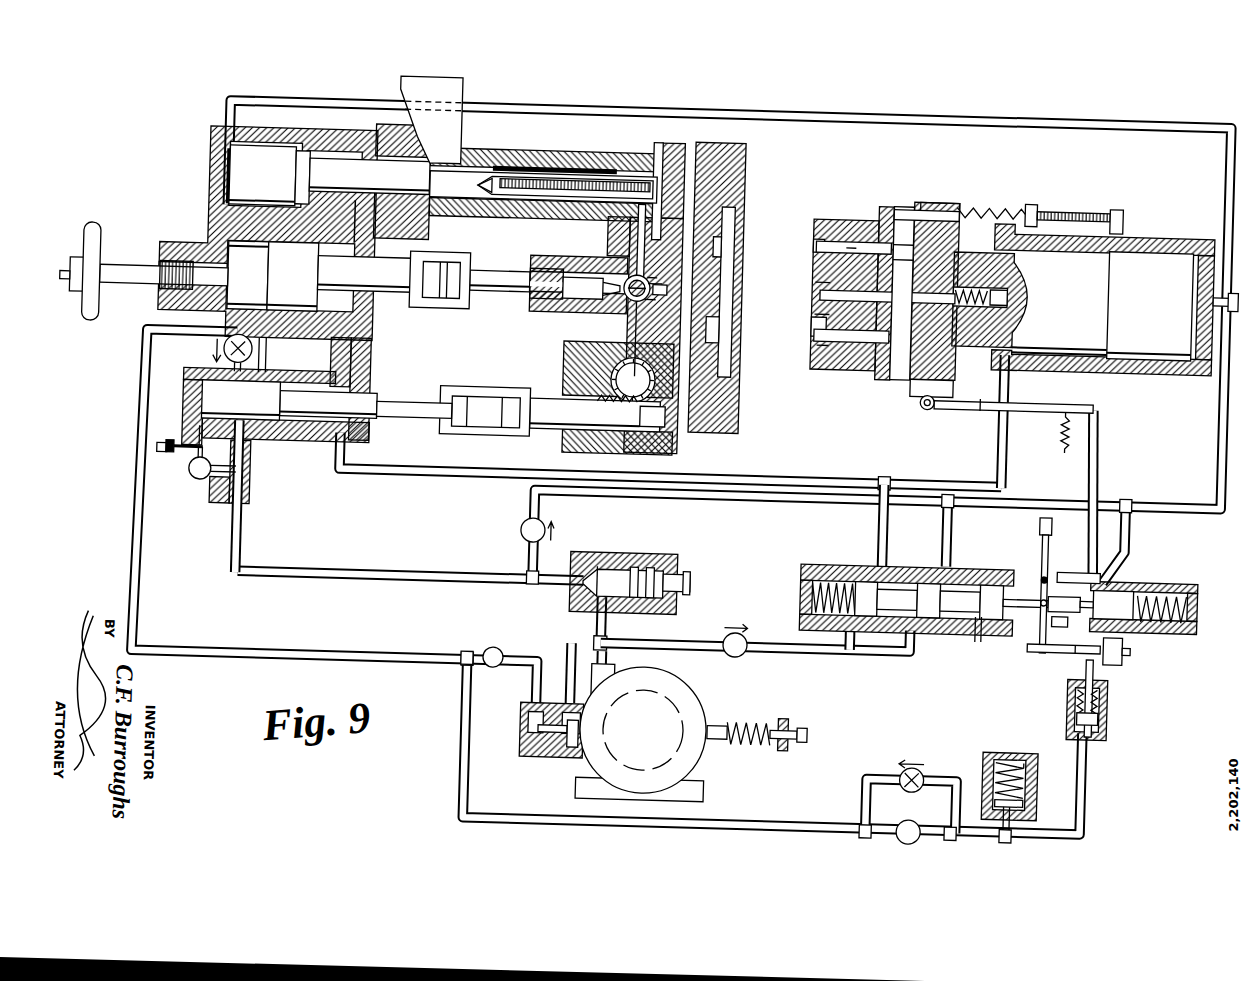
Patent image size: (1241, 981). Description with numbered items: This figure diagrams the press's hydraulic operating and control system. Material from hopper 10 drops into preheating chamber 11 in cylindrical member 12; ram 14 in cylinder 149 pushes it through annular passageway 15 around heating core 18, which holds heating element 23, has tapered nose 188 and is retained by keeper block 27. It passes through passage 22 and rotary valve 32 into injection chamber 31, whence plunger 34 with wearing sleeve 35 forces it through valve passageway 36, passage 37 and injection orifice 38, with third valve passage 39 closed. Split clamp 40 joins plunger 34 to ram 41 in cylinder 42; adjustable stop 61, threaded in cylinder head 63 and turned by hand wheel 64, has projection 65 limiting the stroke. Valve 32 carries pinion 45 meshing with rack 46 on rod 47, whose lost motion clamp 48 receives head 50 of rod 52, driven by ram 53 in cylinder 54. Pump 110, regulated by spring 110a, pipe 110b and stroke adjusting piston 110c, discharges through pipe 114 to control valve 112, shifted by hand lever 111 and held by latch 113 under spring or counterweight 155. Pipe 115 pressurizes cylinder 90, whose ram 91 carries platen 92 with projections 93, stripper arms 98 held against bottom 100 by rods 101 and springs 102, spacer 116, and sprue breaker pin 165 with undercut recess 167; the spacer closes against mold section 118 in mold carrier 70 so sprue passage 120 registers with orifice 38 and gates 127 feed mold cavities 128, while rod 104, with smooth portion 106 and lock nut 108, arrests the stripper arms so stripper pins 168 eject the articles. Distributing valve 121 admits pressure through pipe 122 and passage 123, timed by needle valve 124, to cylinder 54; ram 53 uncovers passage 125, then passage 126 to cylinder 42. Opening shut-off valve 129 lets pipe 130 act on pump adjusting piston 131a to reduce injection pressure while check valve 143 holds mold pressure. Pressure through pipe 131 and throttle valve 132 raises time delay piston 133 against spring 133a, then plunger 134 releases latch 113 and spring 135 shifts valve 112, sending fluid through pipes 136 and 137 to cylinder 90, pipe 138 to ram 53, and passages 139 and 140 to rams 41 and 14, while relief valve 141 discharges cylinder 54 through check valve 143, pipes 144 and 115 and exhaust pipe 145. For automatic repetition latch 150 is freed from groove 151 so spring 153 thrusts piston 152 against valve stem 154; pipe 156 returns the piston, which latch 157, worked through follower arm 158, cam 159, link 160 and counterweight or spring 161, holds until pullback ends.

The hopper 10 is at (455, 95).
The preheating chamber 11 is at (459, 205).
The cylindrical member 12 is at (483, 208).
The double acting hydraulically operated ram 14 is at (266, 155).
The annular passageway 15 is at (405, 186).
The internal cylindrical heating core 18 is at (532, 197).
The plunger tip 188 is at (478, 187).
The passage 22 is at (636, 232).
The electrical heating element 23 is at (563, 178).
The keeper block 27 is at (679, 200).
The injection chamber 31 is at (589, 300).
The three way rotary cylindrical valve 32 is at (657, 300).
The plunger 34 is at (506, 276).
The removable wearing sleeve 35 is at (527, 296).
The valve passageway 36 is at (658, 277).
The passage 37 is at (668, 292).
The injection orifice 38 is at (663, 283).
The third valve passage 39 is at (631, 299).
The split clamp 40 is at (452, 307).
The double acting ram 41 is at (247, 291).
The cylinder 42 is at (252, 236).
The pinion 45 is at (614, 376).
The rack 46 is at (600, 397).
The rod 47 is at (549, 431).
The lost motion split connecting clamp 48 is at (489, 433).
The head 50 is at (458, 396).
The piston rod 52 is at (377, 396).
The double acting ram 53 is at (268, 385).
The cylinder 54 is at (304, 433).
The adjustable stop 61 is at (214, 264).
The cylinder head 63 is at (172, 291).
The hand wheel 64 is at (99, 305).
The forward projection 65 is at (236, 272).
The mold carrier 70 is at (741, 211).
The cylinder 90 is at (1198, 242).
The double acting hydraulic ram 91 is at (1141, 255).
The mold platen 92 is at (941, 205).
The forward projections 93 is at (898, 230).
The vertical arms 98 is at (879, 385).
The bottom of recesses 100 is at (905, 253).
The rods 101 is at (910, 290).
The springs 102 is at (1001, 291).
The rod 104 is at (1081, 211).
The smooth portion 106 is at (925, 205).
The lock nut 108 is at (1034, 205).
The pump 110 is at (692, 706).
The adjustable spring 110a is at (754, 725).
The pipe 110b is at (583, 643).
The pump stroke adjusting piston 110c is at (578, 748).
The hand lever 111 is at (1040, 544).
The control valve 112 is at (931, 618).
The pivotal latch 113 is at (1052, 653).
The pipe 114 is at (778, 651).
The pipe 115 is at (948, 556).
The spacer 116 is at (826, 366).
The mold section 118 is at (718, 361).
The sprue passage 120 is at (728, 301).
The distributing valve 121 is at (621, 556).
The pipe 122 is at (435, 574).
The needle valve controlled passage 123 is at (199, 432).
The needle valve 124 is at (166, 454).
The passage 125 is at (243, 441).
The passage 126 is at (268, 341).
The gates 127 is at (816, 285).
The mold cavities 128 is at (815, 250).
The shut-off valve 129 is at (503, 649).
The pipe 130 is at (146, 363).
The control pipe 131 is at (465, 686).
The pump adjusting piston 131a is at (538, 730).
The throttle valve 132 is at (916, 843).
The time delay piston 133 is at (1030, 804).
The spring 133a is at (1030, 775).
The spring pressed plunger 134 is at (1106, 716).
The spring 135 is at (810, 591).
The pipe 136 is at (883, 556).
The pipe 137 is at (1010, 449).
The pipe 138 is at (779, 472).
The passage 139 is at (358, 344).
The passage 140 is at (352, 236).
The relief valve 141 is at (190, 478).
The check valve 143 is at (521, 532).
The pipe 144 is at (713, 498).
The pipe 145 is at (982, 649).
The housing 149 is at (321, 142).
The latch 150 is at (1062, 614).
The groove 151 is at (1085, 606).
The piston 152 is at (1141, 591).
The spring 153 is at (1182, 594).
The stem 154 is at (1027, 599).
The spring or counterweight 155 is at (1123, 661).
The pipe 156 is at (1130, 543).
The latch 157 is at (1093, 574).
The pivoted follower arm 158 is at (961, 411).
The cam 159 is at (946, 388).
The link 160 is at (1096, 450).
The counterweight or spring 161 is at (1062, 432).
The sprue breaker pin 165 is at (816, 316).
The undercut recess 167 is at (822, 298).
The stripper pins 168 is at (851, 248).